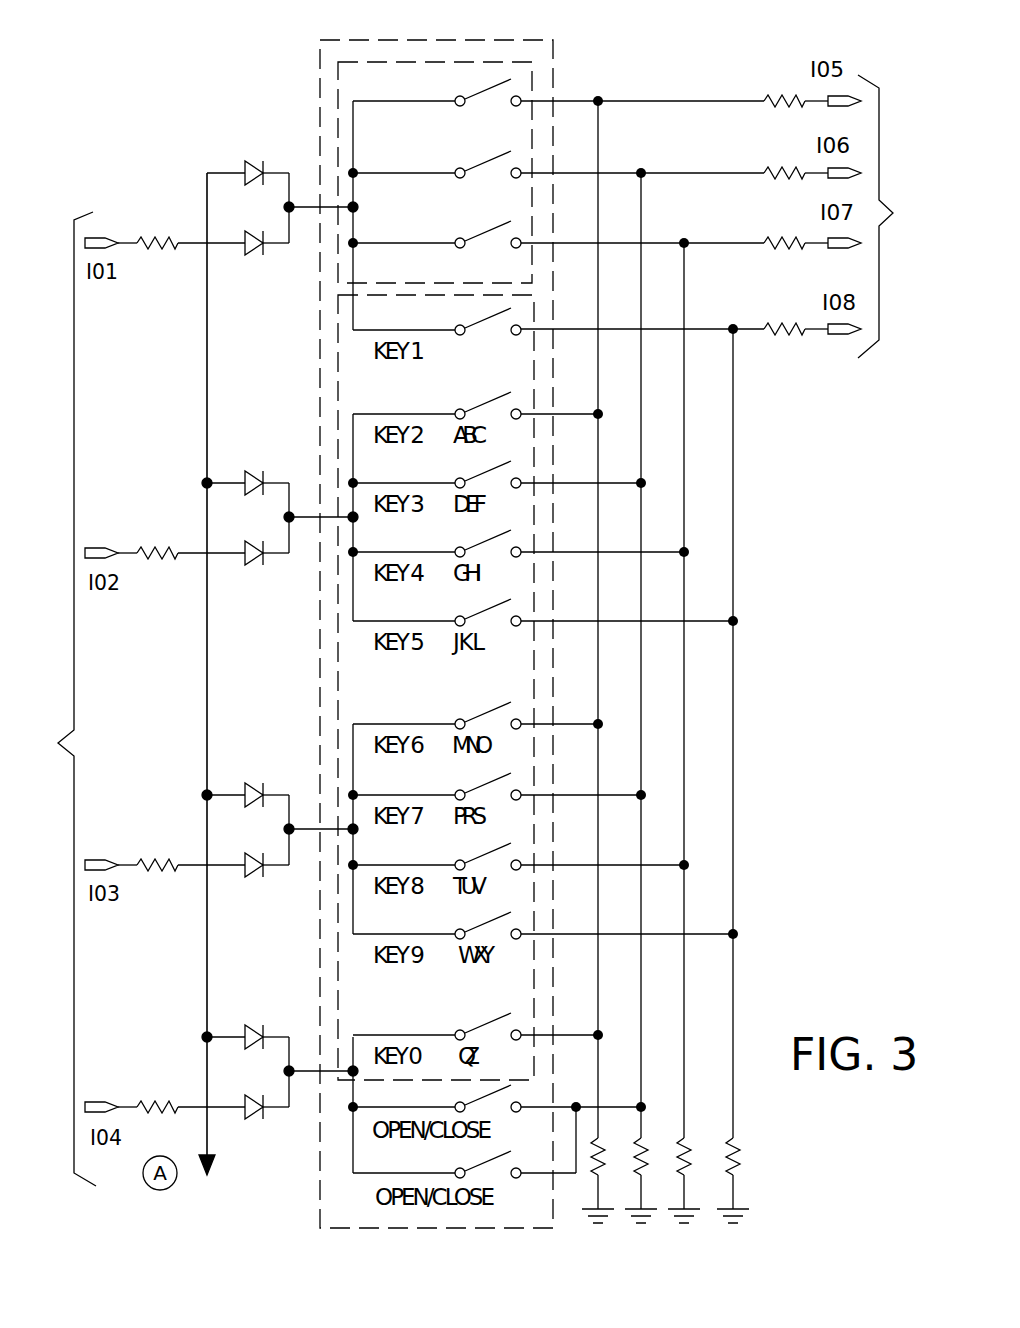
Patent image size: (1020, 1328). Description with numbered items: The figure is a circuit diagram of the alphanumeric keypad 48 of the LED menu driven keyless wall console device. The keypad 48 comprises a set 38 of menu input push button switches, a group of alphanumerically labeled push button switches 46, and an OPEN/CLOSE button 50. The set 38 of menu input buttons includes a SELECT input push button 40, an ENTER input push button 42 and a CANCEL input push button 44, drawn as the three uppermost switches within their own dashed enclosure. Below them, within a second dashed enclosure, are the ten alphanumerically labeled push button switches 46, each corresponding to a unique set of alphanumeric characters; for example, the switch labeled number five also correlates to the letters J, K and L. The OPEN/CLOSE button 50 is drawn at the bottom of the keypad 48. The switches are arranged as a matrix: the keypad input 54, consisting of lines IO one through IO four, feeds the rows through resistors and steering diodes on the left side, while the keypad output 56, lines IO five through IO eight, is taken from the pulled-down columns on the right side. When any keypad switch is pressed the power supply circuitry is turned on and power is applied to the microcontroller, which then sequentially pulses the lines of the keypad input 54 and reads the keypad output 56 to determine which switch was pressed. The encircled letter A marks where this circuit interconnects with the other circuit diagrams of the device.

The set of menu input push button switches 38 is at (535, 80).
The SELECT input push button 40 is at (405, 96).
The ENTER input push button 42 is at (415, 168).
The CANCEL input push button 44 is at (440, 238).
The alphanumerically labeled push button switches 46 is at (338, 365).
The alphanumeric keypad 48 is at (483, 40).
The OPEN/CLOSE button 50 is at (470, 1163).
The keypad input 54 is at (58, 699).
The keypad output 56 is at (726, 216).